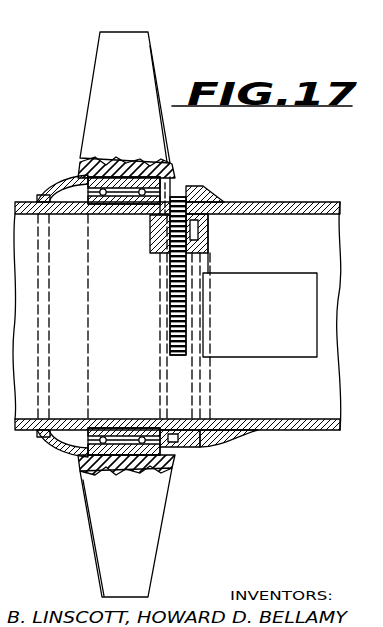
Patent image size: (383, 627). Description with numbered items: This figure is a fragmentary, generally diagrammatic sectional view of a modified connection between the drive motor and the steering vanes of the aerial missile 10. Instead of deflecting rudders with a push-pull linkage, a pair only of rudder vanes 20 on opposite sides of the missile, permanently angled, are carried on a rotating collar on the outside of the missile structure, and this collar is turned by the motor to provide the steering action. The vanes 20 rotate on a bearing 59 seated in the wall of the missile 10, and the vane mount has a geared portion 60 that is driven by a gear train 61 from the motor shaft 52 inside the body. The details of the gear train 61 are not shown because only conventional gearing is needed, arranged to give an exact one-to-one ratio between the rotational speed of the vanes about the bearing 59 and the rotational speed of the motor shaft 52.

The aerial missile 10 is at (304, 431).
The rudder vane 20 is at (106, 63).
The motor shaft 52 is at (190, 321).
The bearing 59 is at (125, 198).
The geared portion 60 is at (181, 196).
The gear train 61 is at (173, 262).